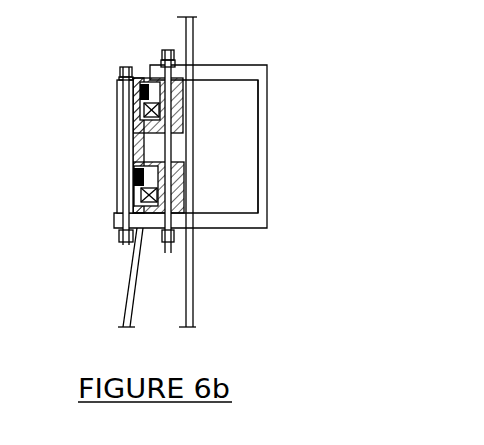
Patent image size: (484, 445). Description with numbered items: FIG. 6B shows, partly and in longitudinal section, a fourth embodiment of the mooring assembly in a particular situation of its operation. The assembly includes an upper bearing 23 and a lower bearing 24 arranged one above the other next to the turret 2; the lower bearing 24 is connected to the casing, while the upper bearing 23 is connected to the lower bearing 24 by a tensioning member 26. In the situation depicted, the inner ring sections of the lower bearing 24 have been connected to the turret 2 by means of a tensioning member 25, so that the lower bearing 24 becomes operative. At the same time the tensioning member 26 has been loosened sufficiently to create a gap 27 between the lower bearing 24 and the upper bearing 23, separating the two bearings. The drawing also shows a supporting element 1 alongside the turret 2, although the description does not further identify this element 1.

The leg 1 is at (125, 284).
The turret 2 is at (196, 284).
The upper bearing 23 is at (120, 110).
The lower bearing 24 is at (120, 187).
The tensioning member 25 is at (182, 203).
The tensioning member 26 is at (120, 95).
The gap 27 is at (120, 133).